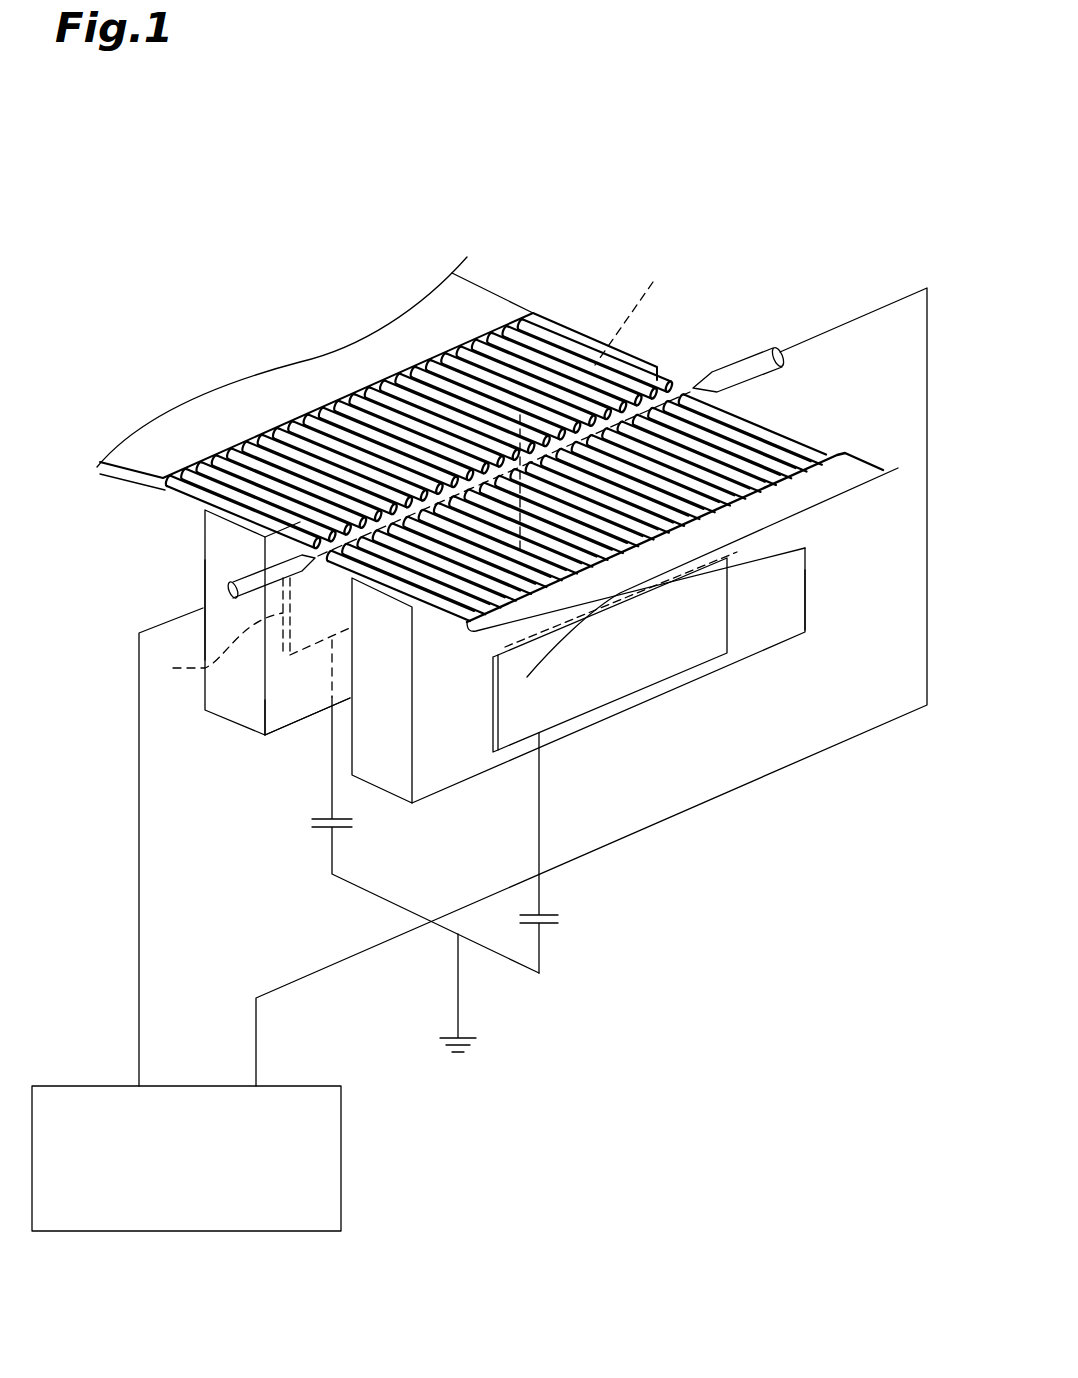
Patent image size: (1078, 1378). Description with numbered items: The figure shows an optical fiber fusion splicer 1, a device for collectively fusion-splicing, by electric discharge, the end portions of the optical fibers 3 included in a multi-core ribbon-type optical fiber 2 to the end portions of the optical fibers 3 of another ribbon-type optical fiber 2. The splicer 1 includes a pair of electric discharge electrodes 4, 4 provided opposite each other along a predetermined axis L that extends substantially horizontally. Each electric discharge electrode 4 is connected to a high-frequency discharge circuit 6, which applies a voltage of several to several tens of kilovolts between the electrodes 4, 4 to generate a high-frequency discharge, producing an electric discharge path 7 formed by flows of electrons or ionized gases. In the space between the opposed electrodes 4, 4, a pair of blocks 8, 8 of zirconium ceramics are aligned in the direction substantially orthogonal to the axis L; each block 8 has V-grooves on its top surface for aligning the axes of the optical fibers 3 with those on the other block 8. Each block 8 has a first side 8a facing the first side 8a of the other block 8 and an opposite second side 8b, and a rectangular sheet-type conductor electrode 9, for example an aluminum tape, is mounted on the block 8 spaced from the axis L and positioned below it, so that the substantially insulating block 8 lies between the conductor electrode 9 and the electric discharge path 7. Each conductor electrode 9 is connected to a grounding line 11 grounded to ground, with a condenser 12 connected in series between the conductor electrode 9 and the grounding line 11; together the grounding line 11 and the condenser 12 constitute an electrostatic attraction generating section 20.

The optical fiber fusion splicer 1 is at (750, 195).
The ribbon-type optical fiber 2 is at (480, 302).
The optical fiber 3 is at (427, 387).
The electric discharge electrode 4 is at (230, 583).
The high-frequency discharge circuit 6 is at (341, 1140).
The electric discharge path 7 is at (591, 401).
The block 8 is at (232, 712).
The first side 8a is at (203, 592).
The second side 8b is at (290, 690).
The conductor electrode 9 is at (650, 740).
The grounding line 11 is at (458, 995).
The condenser 12 is at (318, 828).
The electrostatic attraction generating section 20 is at (627, 1072).
The axis L is at (197, 518).